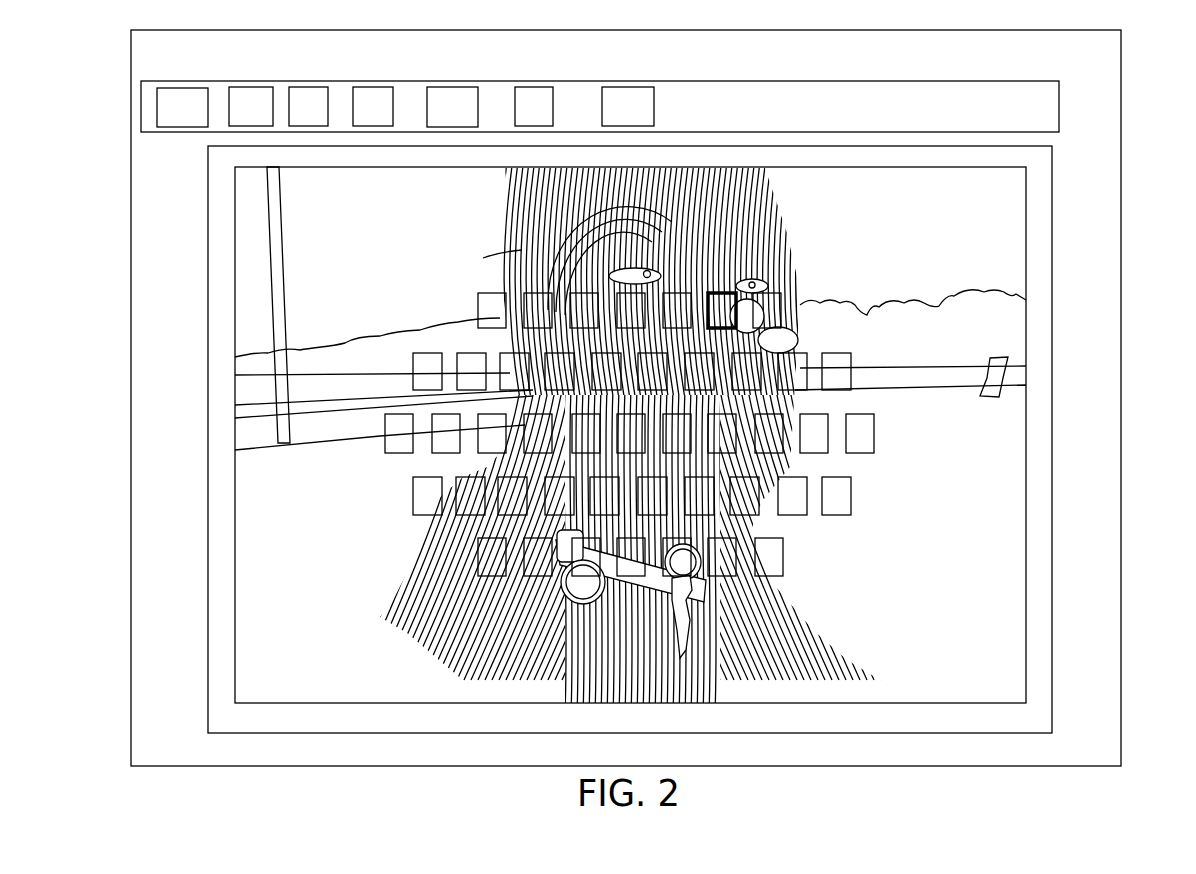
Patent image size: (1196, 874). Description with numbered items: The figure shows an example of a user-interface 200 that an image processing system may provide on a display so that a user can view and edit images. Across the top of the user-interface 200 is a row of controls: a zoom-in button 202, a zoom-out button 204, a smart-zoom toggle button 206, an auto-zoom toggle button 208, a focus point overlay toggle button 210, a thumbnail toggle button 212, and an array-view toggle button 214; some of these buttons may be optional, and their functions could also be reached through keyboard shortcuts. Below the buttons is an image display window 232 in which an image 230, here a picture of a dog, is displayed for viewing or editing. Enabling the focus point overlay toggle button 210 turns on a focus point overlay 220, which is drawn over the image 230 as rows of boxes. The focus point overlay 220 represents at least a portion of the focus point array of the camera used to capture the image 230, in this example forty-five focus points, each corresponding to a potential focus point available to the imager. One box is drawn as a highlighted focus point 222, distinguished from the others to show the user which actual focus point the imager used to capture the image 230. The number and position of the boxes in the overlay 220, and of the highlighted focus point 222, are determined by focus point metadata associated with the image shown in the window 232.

The user-interface 200 is at (808, 22).
The zoom-in button 202 is at (157, 105).
The zoom-out button 204 is at (229, 100).
The smart-zoom toggle button 206 is at (289, 100).
The auto-zoom toggle button 208 is at (373, 88).
The focus point overlay toggle button 210 is at (464, 87).
The thumbnail toggle button 212 is at (553, 101).
The array-view toggle button 214 is at (654, 110).
The focus point overlay 220 is at (474, 309).
The highlighted focus point 222 is at (743, 258).
The image 230 is at (1052, 243).
The image display window 232 is at (1053, 302).